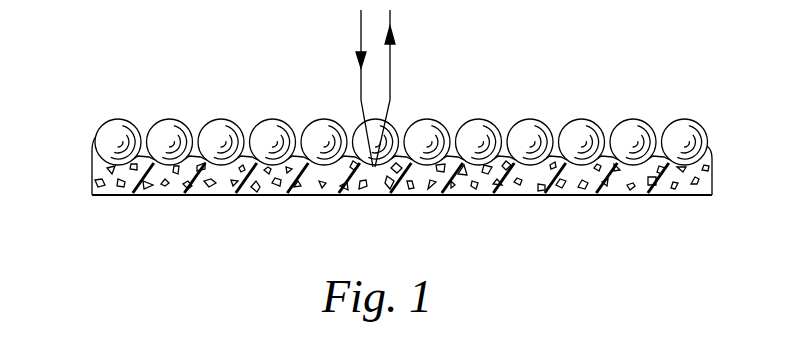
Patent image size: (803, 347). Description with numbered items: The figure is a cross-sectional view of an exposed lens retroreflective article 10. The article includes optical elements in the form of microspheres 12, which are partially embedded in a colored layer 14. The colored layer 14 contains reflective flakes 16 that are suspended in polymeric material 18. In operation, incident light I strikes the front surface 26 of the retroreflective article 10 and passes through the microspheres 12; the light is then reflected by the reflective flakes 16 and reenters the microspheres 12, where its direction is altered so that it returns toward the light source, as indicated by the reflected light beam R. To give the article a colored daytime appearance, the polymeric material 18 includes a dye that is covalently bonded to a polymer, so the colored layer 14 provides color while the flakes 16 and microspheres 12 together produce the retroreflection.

The retroreflective article 10 is at (400, 148).
The microspheres 12 is at (309, 185).
The colored layer 14 is at (400, 188).
The reflective flakes 16 is at (217, 185).
The polymeric material 18 is at (95, 178).
The front surface 26 is at (164, 110).
The incident light I is at (360, 82).
The reflected light beam R is at (393, 55).